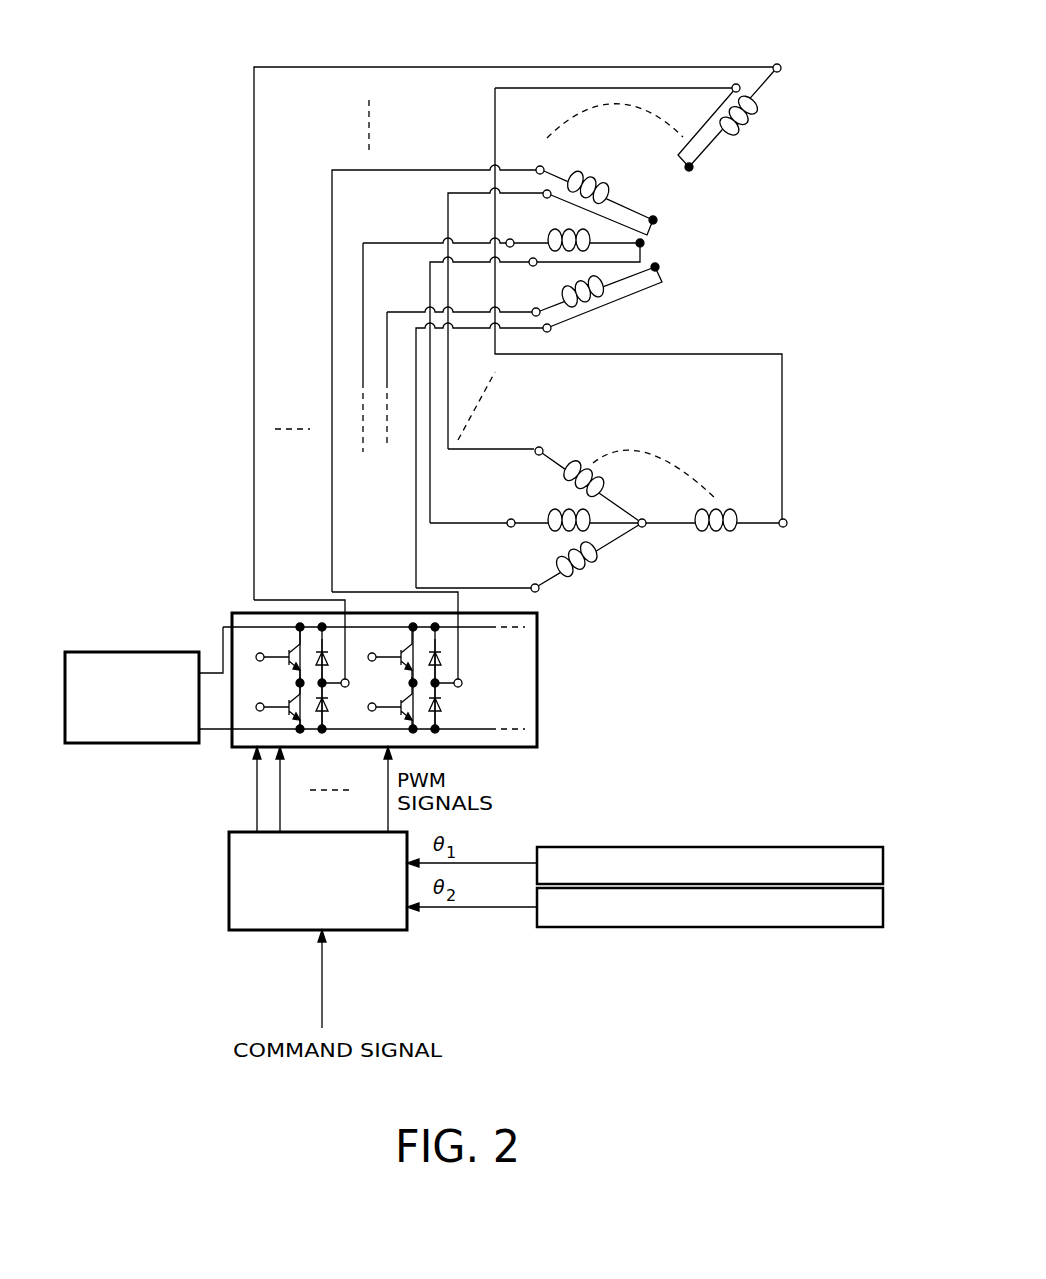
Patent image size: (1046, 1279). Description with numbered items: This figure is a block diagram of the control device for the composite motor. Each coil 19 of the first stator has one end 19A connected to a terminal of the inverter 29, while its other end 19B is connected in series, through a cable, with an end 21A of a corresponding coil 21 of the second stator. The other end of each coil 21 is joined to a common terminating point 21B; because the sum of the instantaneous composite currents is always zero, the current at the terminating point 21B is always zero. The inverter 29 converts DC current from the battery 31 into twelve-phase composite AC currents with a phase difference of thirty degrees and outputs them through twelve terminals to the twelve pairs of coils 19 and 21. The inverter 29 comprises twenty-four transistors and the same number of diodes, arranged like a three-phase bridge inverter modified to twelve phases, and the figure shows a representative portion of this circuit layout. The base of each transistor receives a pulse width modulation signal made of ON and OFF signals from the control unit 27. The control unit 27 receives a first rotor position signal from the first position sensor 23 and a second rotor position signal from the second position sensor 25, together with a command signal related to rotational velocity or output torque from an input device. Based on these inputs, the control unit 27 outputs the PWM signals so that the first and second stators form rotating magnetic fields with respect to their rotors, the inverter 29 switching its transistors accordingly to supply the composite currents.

The coil of the first stator 19 is at (683, 273).
The one end of coil 19 19A is at (781, 66).
The other end of coil 19 19B is at (736, 84).
The coil of the second stator 21 is at (625, 566).
The end of coil 21 21A is at (787, 529).
The terminating point 21B is at (647, 529).
The first position sensor 23 is at (548, 845).
The second position sensor 25 is at (548, 928).
The control unit 27 is at (383, 930).
The inverter 29 is at (237, 748).
The battery 31 is at (150, 744).